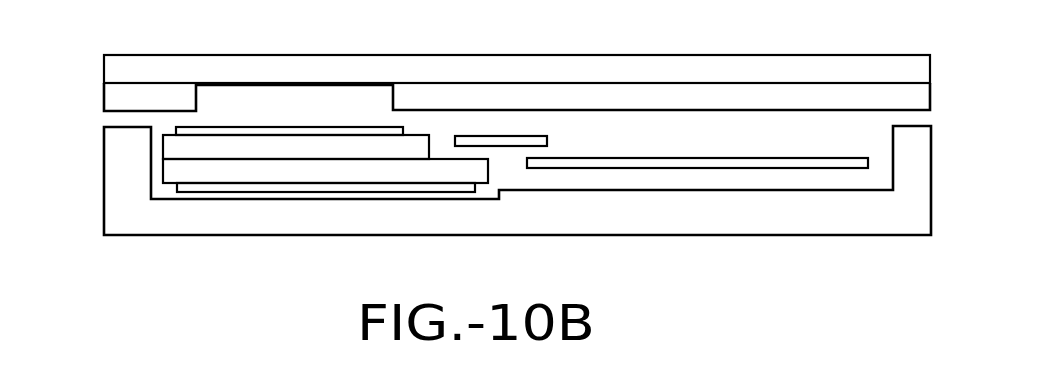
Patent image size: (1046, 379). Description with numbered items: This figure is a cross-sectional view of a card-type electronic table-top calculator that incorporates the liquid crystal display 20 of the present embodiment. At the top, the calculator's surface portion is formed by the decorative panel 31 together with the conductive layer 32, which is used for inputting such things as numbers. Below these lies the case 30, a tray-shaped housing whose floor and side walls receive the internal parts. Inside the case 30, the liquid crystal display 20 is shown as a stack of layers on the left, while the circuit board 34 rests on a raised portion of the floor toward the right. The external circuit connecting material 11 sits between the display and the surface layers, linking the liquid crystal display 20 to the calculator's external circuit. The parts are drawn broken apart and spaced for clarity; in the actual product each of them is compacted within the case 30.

The external circuit connecting material 11 is at (502, 136).
The liquid crystal display 20 is at (208, 192).
The case 30 is at (692, 218).
The decorative panel 31 is at (740, 63).
The conductive layer 32 is at (823, 97).
The circuit board 34 is at (810, 163).